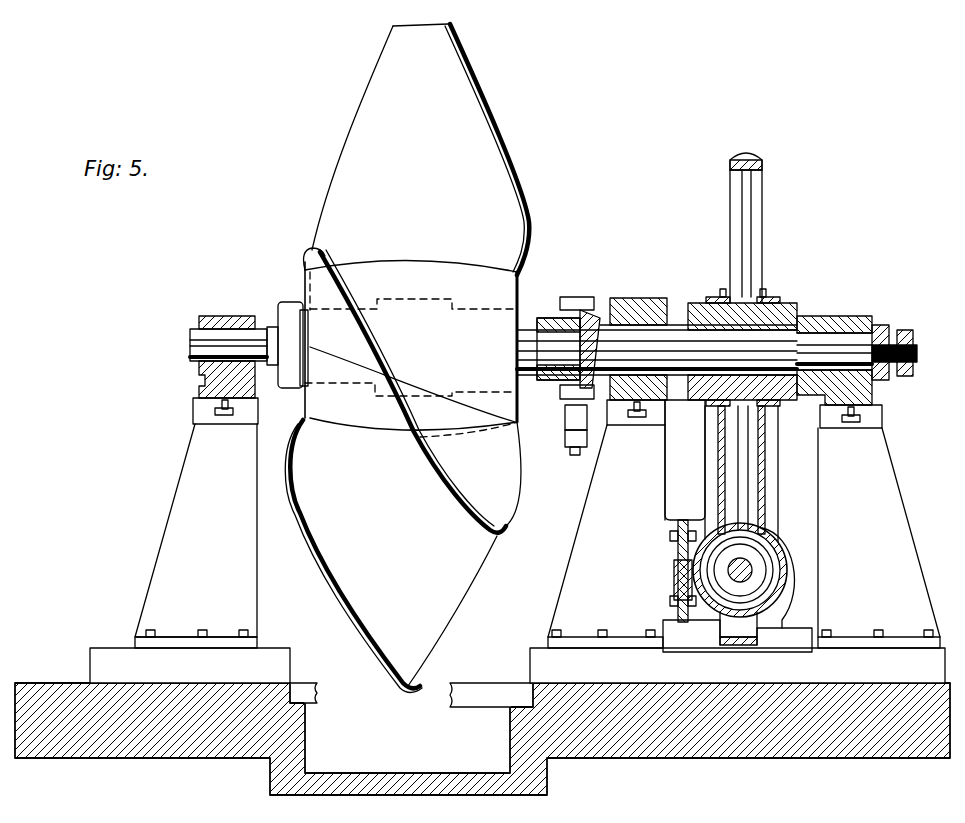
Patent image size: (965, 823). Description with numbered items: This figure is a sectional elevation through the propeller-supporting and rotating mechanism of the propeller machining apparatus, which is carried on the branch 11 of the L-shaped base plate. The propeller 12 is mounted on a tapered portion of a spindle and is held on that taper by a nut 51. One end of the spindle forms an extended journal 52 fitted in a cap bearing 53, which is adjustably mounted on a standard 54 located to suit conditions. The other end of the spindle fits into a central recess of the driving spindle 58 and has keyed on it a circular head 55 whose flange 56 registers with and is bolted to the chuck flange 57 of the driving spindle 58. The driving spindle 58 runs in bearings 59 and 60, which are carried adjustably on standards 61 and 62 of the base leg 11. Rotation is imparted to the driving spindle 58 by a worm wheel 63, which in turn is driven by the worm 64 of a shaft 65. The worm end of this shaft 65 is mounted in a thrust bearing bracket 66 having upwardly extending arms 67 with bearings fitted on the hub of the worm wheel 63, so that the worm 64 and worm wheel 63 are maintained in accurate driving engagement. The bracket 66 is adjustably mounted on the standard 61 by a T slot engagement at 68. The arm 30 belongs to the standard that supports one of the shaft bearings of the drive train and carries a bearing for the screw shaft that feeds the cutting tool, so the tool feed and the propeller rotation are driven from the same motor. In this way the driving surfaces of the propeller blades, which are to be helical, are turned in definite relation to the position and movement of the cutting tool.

The branch of base plate 11 is at (552, 664).
The propeller 12 is at (506, 163).
The arm of standard 30 is at (462, 300).
The nut 51 is at (296, 312).
The extended journal 52 is at (200, 345).
The cap bearing 53 is at (205, 377).
The standard 54 is at (202, 452).
The circular head 55 is at (552, 318).
The flange 56 is at (573, 297).
The chuck flange 57 is at (594, 388).
The driving spindle 58 is at (671, 332).
The bearing 59 is at (638, 298).
The bearing 60 is at (848, 318).
The standard 61 is at (603, 500).
The standard 62 is at (875, 480).
The worm wheel 63 is at (752, 229).
The worm 64 is at (765, 571).
The shaft 65 is at (694, 575).
The thrust bearing bracket 66 is at (679, 556).
The upwardly extending arms 67 is at (719, 461).
The T slot engagement 68 is at (671, 601).